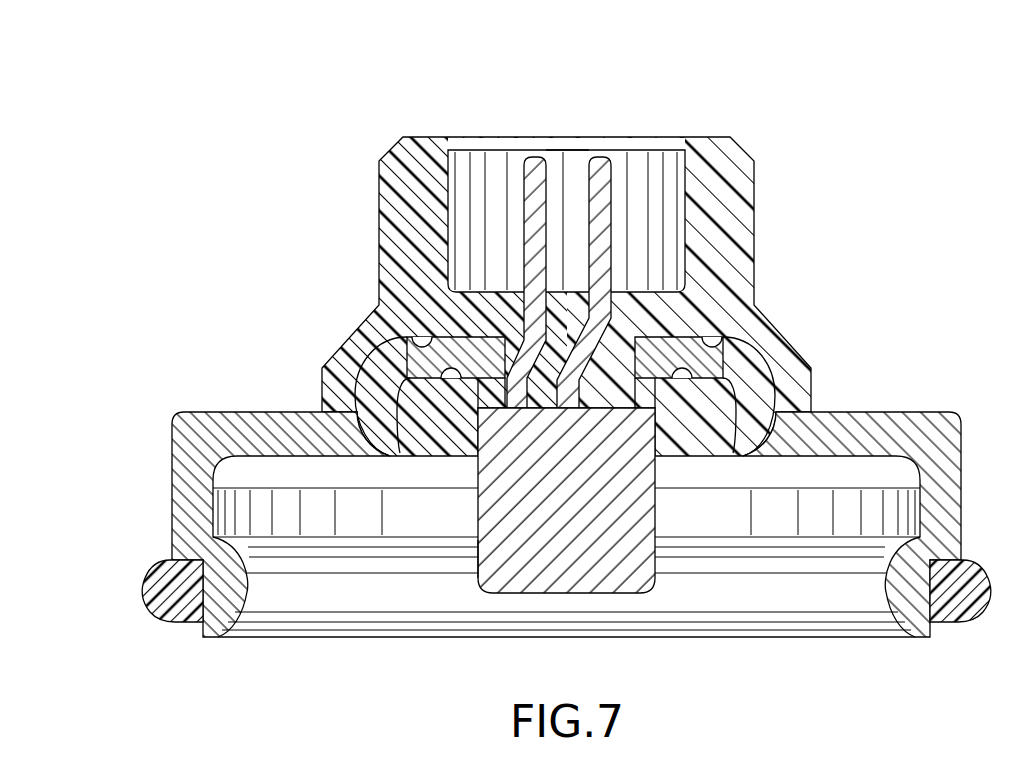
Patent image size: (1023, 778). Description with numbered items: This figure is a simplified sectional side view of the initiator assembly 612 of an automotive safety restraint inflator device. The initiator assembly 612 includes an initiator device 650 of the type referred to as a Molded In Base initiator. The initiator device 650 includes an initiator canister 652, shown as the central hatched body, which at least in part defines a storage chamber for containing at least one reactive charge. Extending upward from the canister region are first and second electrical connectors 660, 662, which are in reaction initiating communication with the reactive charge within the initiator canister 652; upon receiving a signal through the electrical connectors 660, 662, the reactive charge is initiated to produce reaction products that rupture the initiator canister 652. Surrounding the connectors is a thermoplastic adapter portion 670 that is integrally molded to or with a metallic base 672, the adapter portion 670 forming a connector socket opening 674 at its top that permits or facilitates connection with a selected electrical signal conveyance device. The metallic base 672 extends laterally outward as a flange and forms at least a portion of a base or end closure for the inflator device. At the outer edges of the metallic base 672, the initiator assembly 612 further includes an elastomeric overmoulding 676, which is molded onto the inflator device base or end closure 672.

The initiator assembly 612 is at (538, 356).
The initiator device 650 is at (580, 540).
The initiator canister 652 is at (481, 569).
The first electrical connector 660 is at (607, 158).
The second electrical connector 662 is at (536, 158).
The thermoplastic adapter portion 670 is at (393, 255).
The metallic base 672 is at (192, 413).
The connector socket opening 674 is at (567, 126).
The elastomeric overmoulding 676 is at (162, 608).